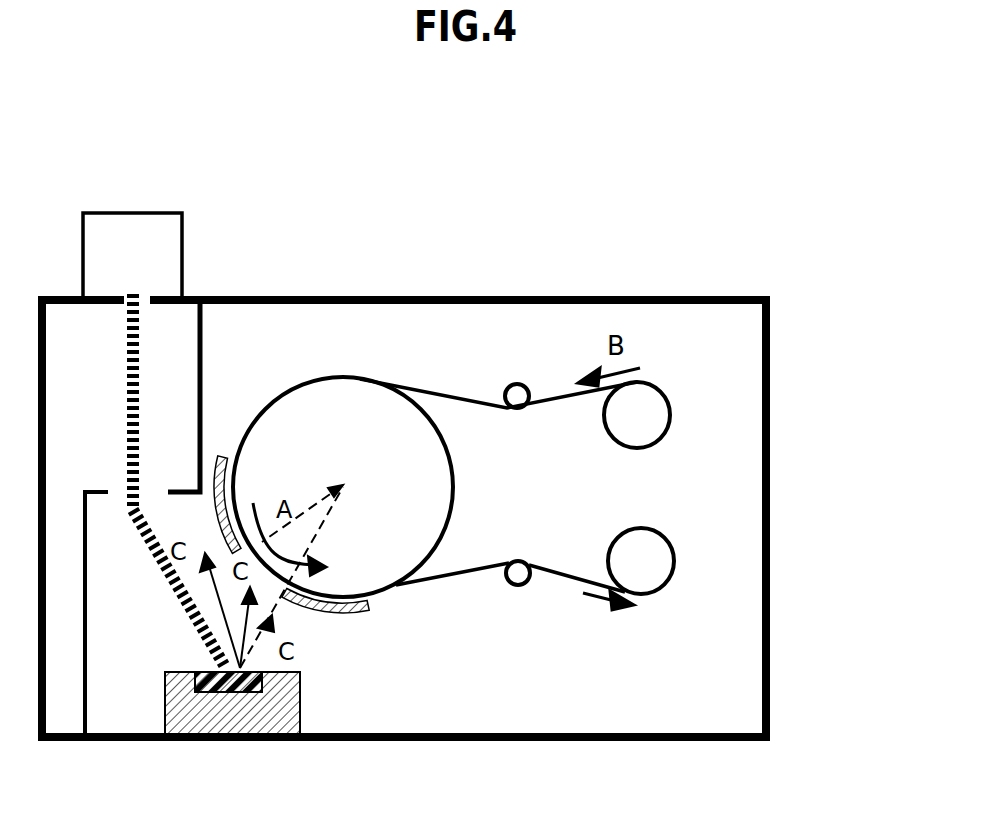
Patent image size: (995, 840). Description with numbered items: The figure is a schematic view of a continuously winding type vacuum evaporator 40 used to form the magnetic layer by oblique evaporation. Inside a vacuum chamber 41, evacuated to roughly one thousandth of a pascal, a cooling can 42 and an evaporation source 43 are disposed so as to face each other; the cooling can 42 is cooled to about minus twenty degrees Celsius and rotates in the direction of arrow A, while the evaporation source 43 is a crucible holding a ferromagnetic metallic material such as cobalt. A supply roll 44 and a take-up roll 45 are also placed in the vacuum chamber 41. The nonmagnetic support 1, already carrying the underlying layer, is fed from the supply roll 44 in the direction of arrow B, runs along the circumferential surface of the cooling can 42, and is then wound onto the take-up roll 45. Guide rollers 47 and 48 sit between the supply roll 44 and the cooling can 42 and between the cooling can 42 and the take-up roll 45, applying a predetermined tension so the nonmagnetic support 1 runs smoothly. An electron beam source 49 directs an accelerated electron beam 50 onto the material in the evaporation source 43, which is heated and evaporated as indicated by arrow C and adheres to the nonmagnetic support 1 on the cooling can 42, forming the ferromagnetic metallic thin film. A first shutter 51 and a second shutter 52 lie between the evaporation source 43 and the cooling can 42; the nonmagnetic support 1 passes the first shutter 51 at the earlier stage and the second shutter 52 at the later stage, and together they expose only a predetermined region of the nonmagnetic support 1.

The vacuum evaporator 40 is at (428, 825).
The vacuum chamber 41 is at (733, 440).
The cooling can 42 is at (356, 400).
The evaporation source 43 is at (192, 742).
The supply roll 44 is at (647, 400).
The take-up roll 45 is at (655, 560).
The guide roller 47 is at (517, 384).
The guide roller 48 is at (518, 572).
The electron beam source 49 is at (162, 228).
The electron beam 50 is at (126, 392).
The first shutter 51 is at (218, 455).
The second shutter 52 is at (357, 607).
The nonmagnetic support 1 is at (492, 405).